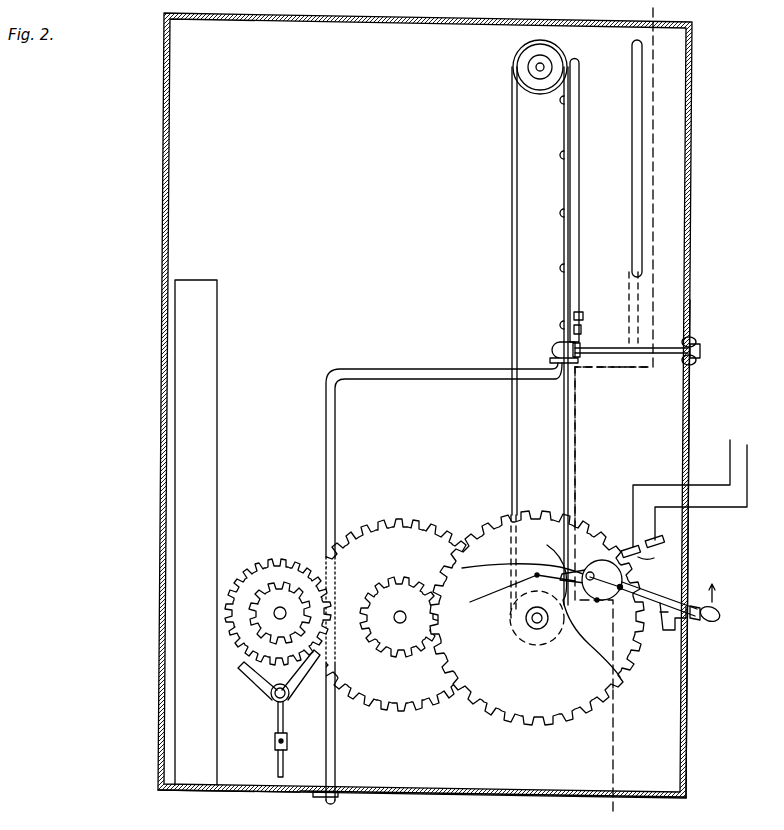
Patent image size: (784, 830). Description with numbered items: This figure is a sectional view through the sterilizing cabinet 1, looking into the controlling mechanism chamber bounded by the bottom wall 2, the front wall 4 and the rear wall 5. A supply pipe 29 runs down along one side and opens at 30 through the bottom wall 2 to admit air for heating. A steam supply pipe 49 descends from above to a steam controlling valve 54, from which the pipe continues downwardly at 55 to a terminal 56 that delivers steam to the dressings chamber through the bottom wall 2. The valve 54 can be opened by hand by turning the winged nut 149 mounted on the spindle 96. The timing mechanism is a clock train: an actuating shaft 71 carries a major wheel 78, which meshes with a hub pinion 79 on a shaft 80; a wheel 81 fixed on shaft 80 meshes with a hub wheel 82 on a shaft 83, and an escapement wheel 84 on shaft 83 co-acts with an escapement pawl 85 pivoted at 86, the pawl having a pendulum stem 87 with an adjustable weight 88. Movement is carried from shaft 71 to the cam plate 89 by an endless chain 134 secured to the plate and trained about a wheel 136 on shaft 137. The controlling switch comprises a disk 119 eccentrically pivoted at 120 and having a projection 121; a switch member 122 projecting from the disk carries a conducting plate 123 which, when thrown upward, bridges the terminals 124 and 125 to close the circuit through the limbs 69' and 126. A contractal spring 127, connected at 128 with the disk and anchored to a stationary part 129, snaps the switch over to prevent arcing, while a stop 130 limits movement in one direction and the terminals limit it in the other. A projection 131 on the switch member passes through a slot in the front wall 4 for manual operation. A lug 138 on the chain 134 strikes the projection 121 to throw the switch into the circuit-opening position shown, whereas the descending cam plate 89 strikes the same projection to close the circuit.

The sterilizing cabinet 1 is at (150, 16).
The bottom wall 2 is at (265, 792).
The front wall 4 is at (686, 728).
The rear wall 5 is at (164, 680).
The supply pipe 29 is at (175, 594).
The pipe opening 30 is at (190, 791).
The steam supply pipe 49 is at (632, 48).
The steam controlling valve 54 is at (556, 351).
The downward pipe extension 55 is at (396, 364).
The pipe terminal 56 is at (352, 795).
The circuit limb 69' is at (711, 483).
The actuating shaft 71 is at (535, 630).
The major wheel 78 is at (530, 692).
The hub pinion 79 is at (402, 611).
The shaft 80 is at (401, 623).
The wheel 81 is at (428, 690).
The hub wheel 82 is at (272, 600).
The shaft 83 is at (284, 607).
The escapement wheel 84 is at (240, 625).
The escapement pawl 85 is at (272, 682).
The pivot 86 is at (276, 702).
The pendulum stem 87 is at (278, 766).
The adjustable weight 88 is at (287, 742).
The cam plate 89 is at (574, 262).
The spindle 96 is at (656, 356).
The disk 119 is at (594, 572).
The eccentric pivot 120 is at (590, 560).
The projection 121 is at (572, 604).
The switch member 122 is at (654, 610).
The conducting plate 123 is at (660, 596).
The terminal 124 is at (649, 557).
The terminal 125 is at (668, 546).
The circuit limb 126 is at (702, 483).
The contractal spring 127 is at (595, 602).
The spring connection 128 is at (624, 584).
The stationary part 129 is at (517, 592).
The stop 130 is at (661, 614).
The projection 131 is at (716, 611).
The endless chain 134 is at (563, 238).
The wheel 136 is at (528, 67).
The shaft 137 is at (526, 58).
The lug 138 is at (526, 573).
The winged nut 149 is at (702, 349).